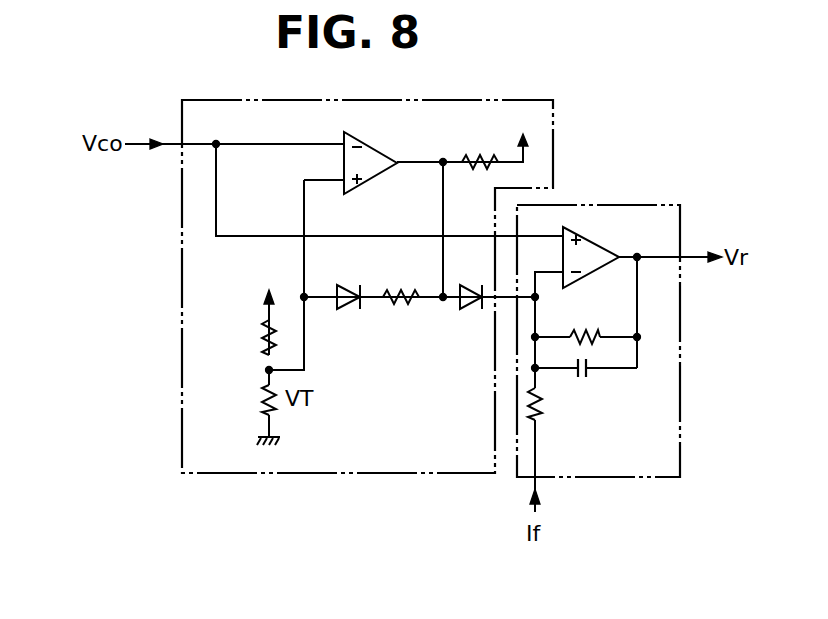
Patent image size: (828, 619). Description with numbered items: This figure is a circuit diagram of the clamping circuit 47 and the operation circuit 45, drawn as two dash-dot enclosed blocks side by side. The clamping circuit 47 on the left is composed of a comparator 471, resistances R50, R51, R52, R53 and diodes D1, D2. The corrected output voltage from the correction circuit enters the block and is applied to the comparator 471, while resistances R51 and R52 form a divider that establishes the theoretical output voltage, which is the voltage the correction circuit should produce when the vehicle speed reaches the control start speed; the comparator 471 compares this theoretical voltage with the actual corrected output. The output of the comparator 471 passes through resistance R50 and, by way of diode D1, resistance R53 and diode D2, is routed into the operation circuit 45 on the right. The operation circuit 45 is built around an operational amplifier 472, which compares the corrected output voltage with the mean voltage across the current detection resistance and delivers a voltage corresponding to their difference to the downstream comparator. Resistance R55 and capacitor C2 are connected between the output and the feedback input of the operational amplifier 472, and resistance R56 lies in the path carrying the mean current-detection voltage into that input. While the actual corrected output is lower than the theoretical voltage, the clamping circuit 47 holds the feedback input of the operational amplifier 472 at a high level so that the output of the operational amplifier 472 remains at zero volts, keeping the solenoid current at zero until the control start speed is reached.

The clamping circuit 47 is at (500, 100).
The operation circuit 45 is at (636, 205).
The comparator 471 is at (380, 152).
The operational amplifier 472 is at (600, 248).
The resistance R50 is at (483, 156).
The resistance R51 is at (264, 336).
The resistance R52 is at (264, 403).
The resistance R53 is at (398, 303).
The feedback resistor R55 is at (592, 331).
The resistor R56 is at (541, 406).
The diode D1 is at (345, 308).
The diode D2 is at (465, 306).
The feedback capacitor C2 is at (588, 372).